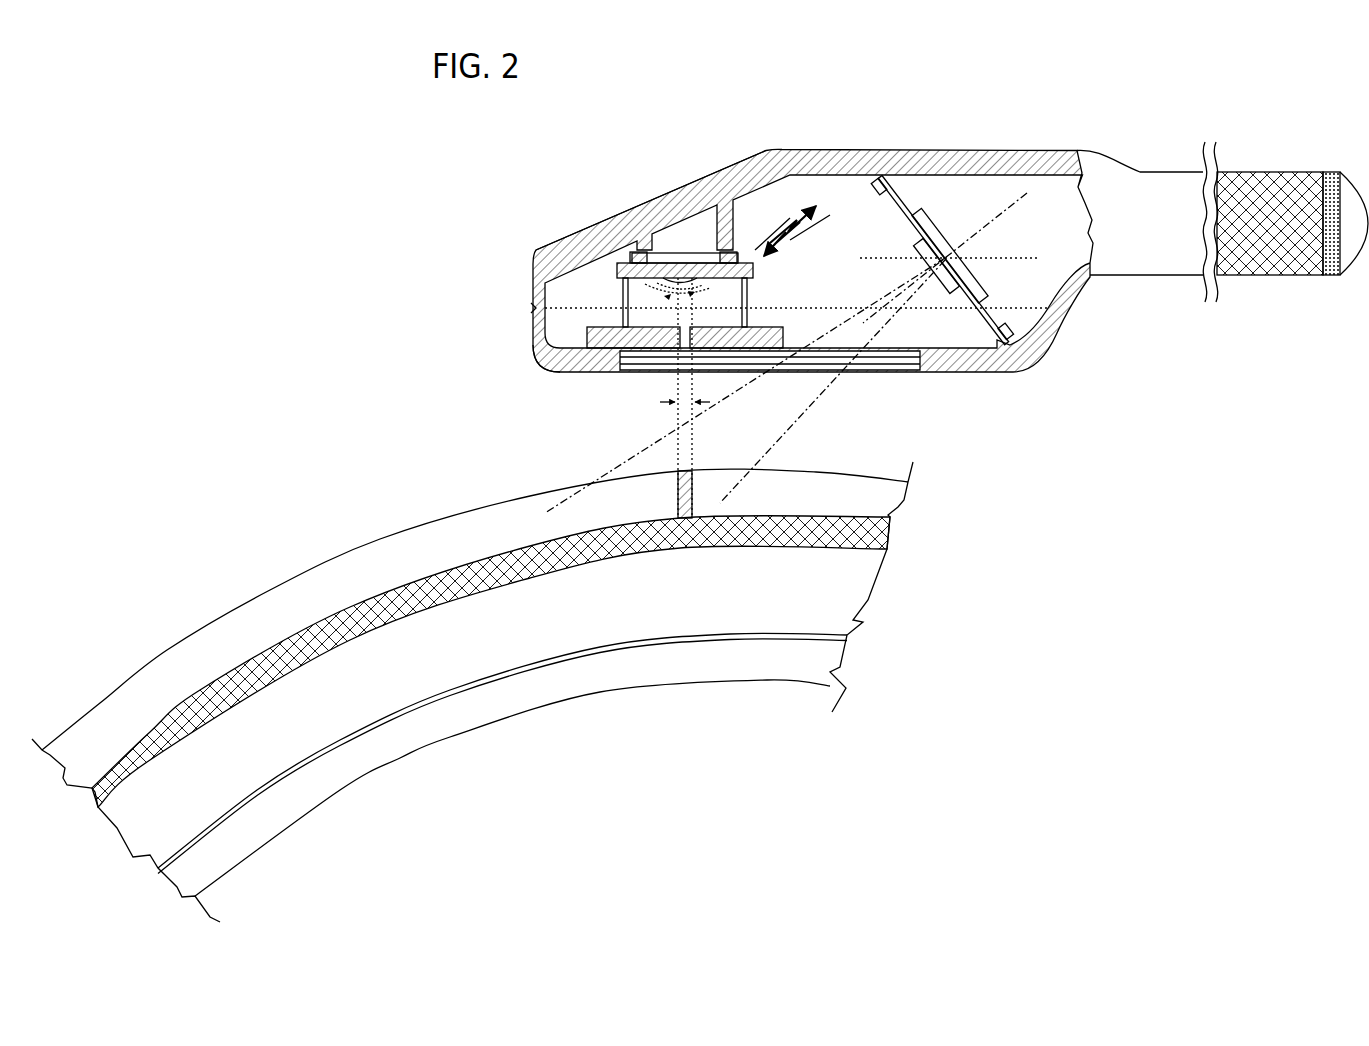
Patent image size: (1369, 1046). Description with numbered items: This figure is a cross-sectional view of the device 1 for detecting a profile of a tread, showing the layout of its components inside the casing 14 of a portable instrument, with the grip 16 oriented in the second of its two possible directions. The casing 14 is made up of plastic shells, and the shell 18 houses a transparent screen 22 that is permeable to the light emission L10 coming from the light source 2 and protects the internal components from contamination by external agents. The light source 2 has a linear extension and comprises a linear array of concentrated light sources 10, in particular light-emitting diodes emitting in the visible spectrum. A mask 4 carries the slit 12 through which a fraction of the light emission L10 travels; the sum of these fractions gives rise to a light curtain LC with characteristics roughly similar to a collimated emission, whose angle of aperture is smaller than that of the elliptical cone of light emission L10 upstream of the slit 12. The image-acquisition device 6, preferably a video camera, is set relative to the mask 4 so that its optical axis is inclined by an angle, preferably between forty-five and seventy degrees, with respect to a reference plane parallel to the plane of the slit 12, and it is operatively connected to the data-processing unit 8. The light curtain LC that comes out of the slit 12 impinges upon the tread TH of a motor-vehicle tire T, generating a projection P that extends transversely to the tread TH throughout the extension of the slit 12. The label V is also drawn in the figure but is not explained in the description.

The device for detecting a profile of a tread 1 is at (1137, 95).
The light source 2 is at (683, 260).
The mask 4 is at (545, 290).
The image-acquisition device 6 is at (978, 283).
The data-processing unit 8 is at (702, 252).
The concentrated light sources 10 is at (633, 230).
The slit 12 is at (678, 362).
The casing 14 is at (1146, 280).
The grip 16 is at (1277, 278).
The shell 18 is at (542, 360).
The transparent screen 22 is at (883, 355).
The tread TH is at (357, 544).
The motor-vehicle tire T is at (487, 731).
The light curtain LC is at (677, 418).
The projection P is at (693, 503).
The reference plane V is at (690, 318).
The light emission L10 is at (745, 290).